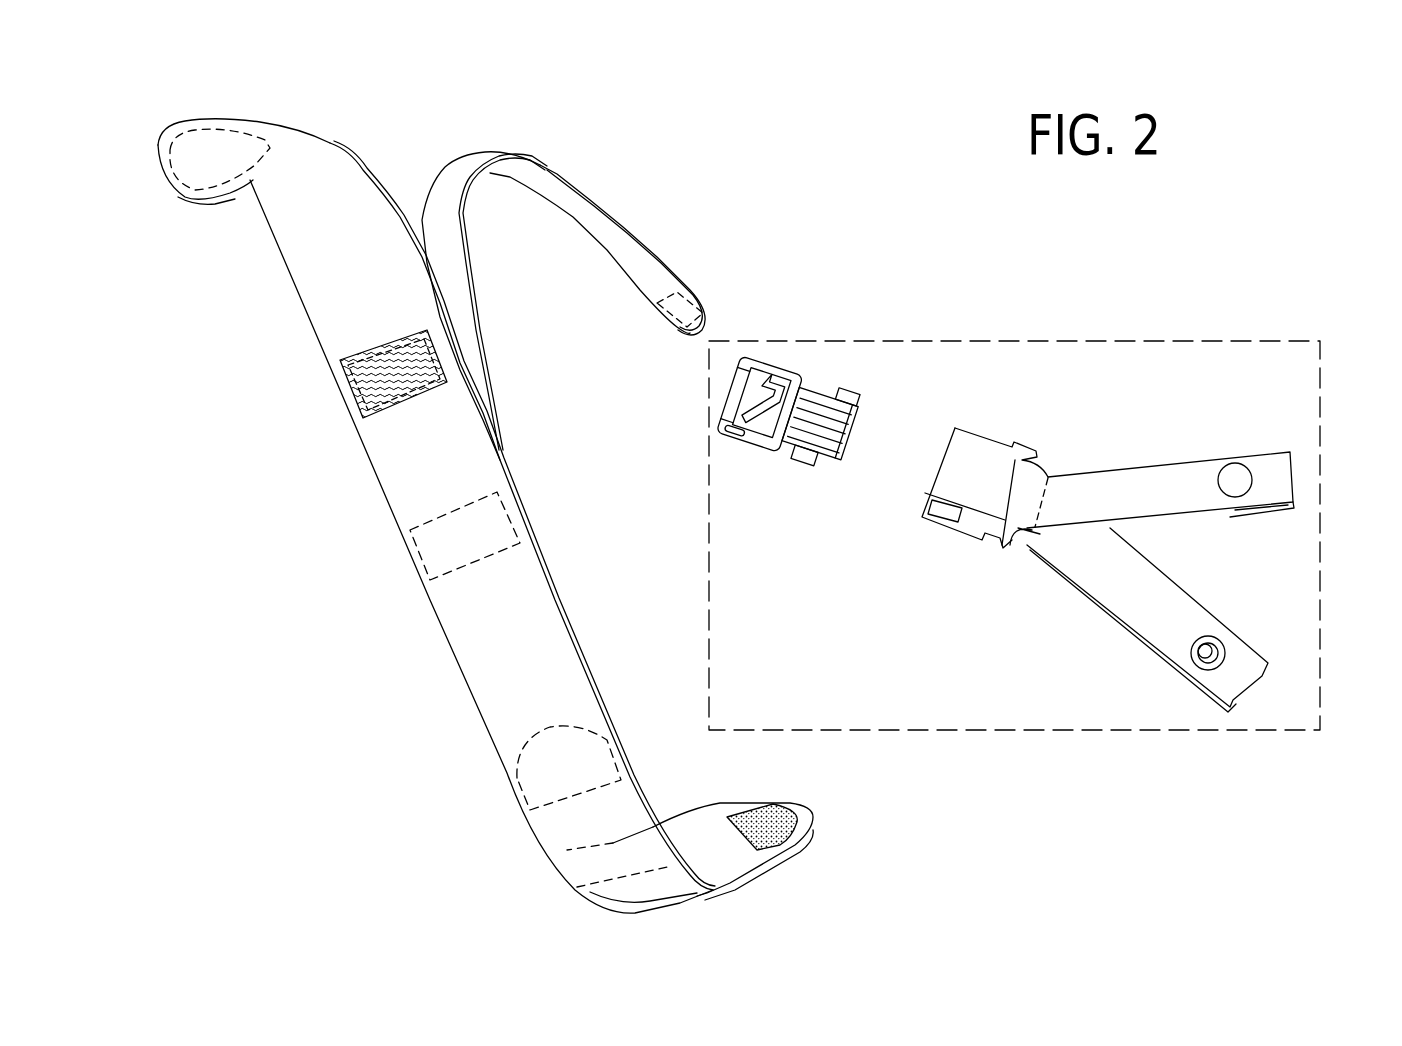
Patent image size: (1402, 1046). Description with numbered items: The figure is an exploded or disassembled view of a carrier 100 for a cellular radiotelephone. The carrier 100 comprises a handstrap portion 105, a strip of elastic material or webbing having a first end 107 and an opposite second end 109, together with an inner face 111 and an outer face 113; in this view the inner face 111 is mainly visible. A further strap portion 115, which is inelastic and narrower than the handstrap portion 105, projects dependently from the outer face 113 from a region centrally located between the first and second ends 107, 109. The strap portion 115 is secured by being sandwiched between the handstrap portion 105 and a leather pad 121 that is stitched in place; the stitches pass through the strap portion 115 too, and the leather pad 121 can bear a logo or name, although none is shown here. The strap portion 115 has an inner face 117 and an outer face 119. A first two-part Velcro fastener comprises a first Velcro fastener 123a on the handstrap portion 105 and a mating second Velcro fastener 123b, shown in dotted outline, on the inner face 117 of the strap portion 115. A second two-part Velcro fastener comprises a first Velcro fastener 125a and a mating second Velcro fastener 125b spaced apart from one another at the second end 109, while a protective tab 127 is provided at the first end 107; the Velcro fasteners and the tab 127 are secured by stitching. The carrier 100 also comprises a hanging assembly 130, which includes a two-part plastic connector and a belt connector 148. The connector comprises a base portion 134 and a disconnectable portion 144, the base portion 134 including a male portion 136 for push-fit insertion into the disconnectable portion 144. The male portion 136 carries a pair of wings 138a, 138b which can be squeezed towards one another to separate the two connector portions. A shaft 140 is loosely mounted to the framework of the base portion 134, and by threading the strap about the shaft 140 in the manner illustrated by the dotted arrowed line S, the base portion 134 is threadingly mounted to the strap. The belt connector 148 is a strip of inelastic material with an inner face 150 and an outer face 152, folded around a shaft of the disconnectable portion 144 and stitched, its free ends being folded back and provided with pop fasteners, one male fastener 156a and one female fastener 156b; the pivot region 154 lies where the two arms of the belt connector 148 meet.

The carrier 100 is at (343, 742).
The handstrap portion 105 is at (368, 462).
The first end 107 is at (260, 110).
The second end 109 is at (785, 860).
The inner face 111 is at (470, 655).
The outer face 113 is at (697, 845).
The strap portion 115 is at (558, 190).
The inner face 117 is at (473, 325).
The outer face 119 is at (612, 258).
The leather pad 121 is at (418, 548).
The first velcro fastener 123a is at (362, 378).
The second velcro fastener 123b is at (695, 310).
The first Velcro fastener 125a is at (775, 808).
The second Velcro fastener 125b is at (530, 782).
The protective tab 127 is at (205, 206).
The hanging assembly 130 is at (1092, 338).
The base portion 134 is at (738, 465).
The male portion 136 is at (868, 452).
The wing 138a is at (820, 485).
The wing 138b is at (855, 405).
The shaft 140 is at (748, 400).
The disconnectable portion 144 is at (1000, 426).
The belt connector 148 is at (1237, 447).
The inner face 150 is at (1130, 613).
The outer face 152 is at (1145, 487).
The pivot 154 is at (1020, 538).
The male fastener 156a is at (1195, 658).
The female fastener 156b is at (1235, 490).
The dotted arrowed line S is at (747, 380).